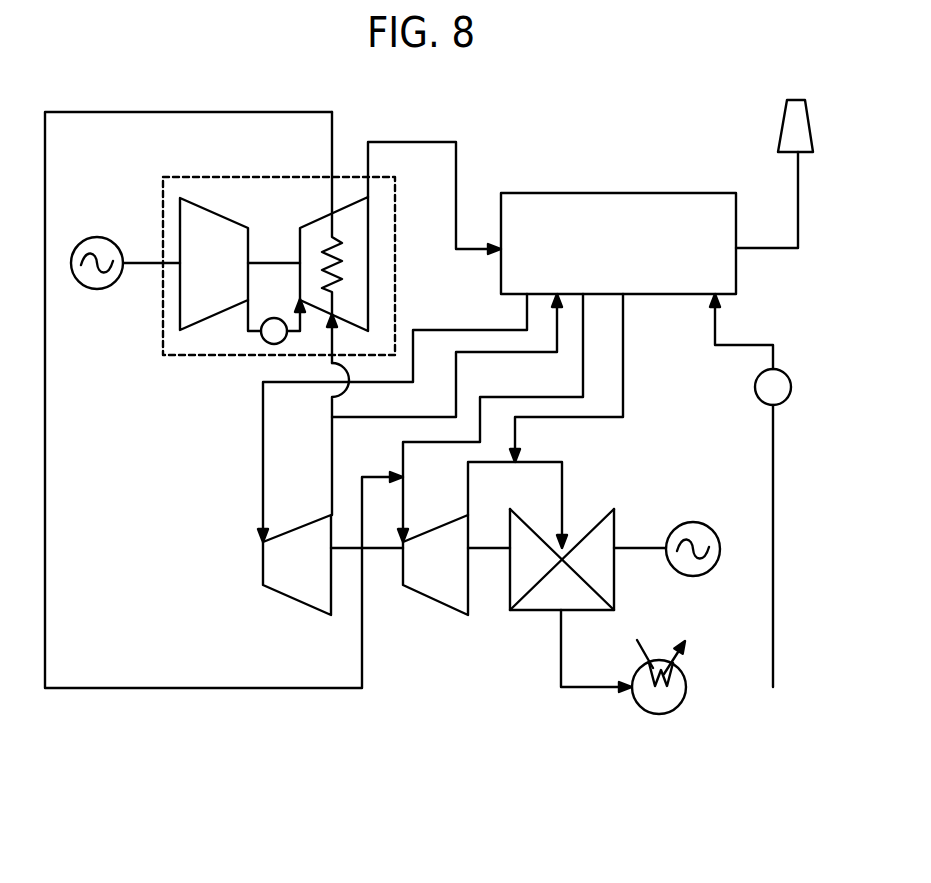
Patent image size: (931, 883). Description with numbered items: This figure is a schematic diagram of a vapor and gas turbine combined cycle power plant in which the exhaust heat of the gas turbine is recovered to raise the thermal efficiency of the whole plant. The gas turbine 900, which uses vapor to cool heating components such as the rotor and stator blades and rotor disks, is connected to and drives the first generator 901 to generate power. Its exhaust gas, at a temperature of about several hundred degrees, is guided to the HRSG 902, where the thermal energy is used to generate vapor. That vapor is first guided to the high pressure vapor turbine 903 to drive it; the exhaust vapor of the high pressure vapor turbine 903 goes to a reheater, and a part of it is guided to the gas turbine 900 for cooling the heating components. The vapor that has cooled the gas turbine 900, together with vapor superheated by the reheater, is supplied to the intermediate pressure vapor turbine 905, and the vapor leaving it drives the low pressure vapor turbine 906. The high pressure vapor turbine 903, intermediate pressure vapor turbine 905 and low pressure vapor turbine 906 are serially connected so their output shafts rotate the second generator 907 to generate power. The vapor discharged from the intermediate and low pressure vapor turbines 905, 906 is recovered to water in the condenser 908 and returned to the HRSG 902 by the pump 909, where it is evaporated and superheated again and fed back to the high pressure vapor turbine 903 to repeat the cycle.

The gas turbine 900 is at (358, 177).
The first generator 901 is at (97, 237).
The HRSG 902 is at (661, 193).
The high pressure vapor turbine 903 is at (263, 558).
The intermediate pressure vapor turbine 905 is at (432, 603).
The low pressure vapor turbine 906 is at (605, 510).
The second generator 907 is at (695, 522).
The condenser 908 is at (656, 714).
The pump 909 is at (791, 387).